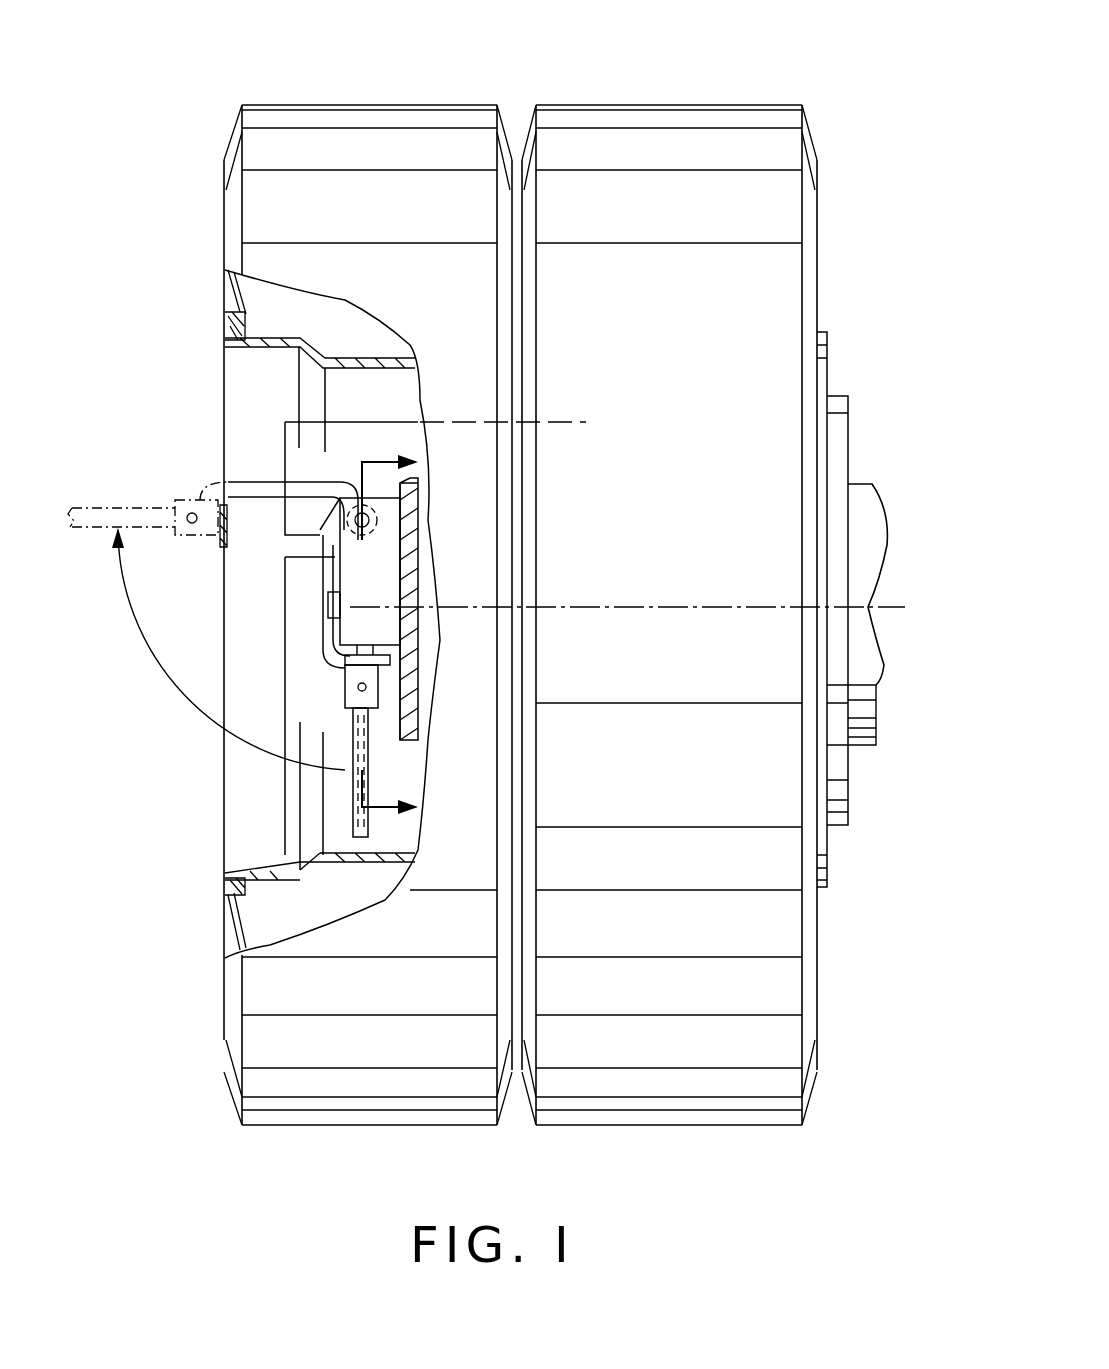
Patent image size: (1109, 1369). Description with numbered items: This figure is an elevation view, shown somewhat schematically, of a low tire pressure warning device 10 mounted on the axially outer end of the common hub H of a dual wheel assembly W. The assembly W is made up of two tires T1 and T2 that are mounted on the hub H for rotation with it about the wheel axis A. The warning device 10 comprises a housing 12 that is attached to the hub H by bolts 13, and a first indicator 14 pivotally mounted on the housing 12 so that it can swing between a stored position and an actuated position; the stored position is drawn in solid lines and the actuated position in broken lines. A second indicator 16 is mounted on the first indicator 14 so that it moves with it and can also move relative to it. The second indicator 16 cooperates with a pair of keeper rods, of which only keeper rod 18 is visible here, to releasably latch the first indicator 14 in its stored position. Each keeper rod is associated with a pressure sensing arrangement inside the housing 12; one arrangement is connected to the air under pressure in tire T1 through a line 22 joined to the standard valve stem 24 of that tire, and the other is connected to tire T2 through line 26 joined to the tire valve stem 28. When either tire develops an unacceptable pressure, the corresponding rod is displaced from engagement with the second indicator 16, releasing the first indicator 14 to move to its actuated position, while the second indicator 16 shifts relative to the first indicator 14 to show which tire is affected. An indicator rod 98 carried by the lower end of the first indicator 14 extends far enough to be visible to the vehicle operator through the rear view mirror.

The low tire pressure warning device 10 is at (250, 613).
The housing 12 is at (385, 596).
The bolts 13 is at (315, 618).
The first indicator 14 is at (245, 472).
The second indicator 16 is at (236, 545).
The keeper rod 18 is at (380, 638).
The line 22 is at (283, 803).
The valve stem 24 is at (283, 896).
The line 26 is at (345, 422).
The tire valve stem 28 is at (587, 420).
The indicator rod 98 is at (152, 505).
The tire T1 is at (410, 105).
The tire T2 is at (680, 105).
The dual wheel assembly W is at (768, 76).
The hub H is at (418, 520).
The wheel axis A is at (888, 607).